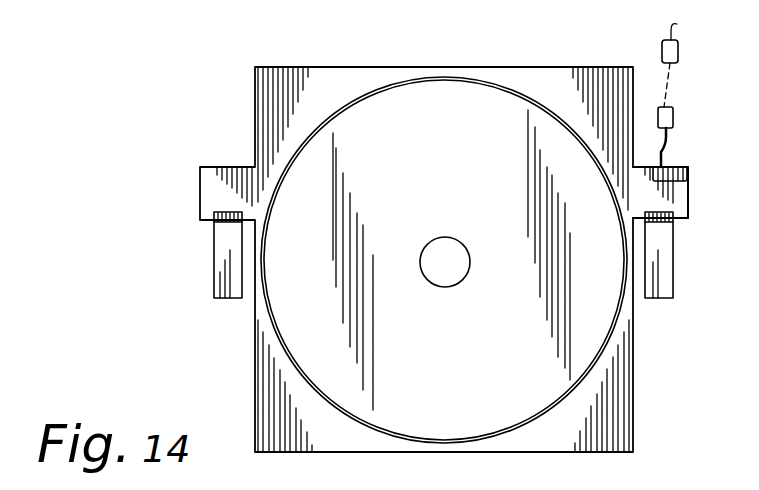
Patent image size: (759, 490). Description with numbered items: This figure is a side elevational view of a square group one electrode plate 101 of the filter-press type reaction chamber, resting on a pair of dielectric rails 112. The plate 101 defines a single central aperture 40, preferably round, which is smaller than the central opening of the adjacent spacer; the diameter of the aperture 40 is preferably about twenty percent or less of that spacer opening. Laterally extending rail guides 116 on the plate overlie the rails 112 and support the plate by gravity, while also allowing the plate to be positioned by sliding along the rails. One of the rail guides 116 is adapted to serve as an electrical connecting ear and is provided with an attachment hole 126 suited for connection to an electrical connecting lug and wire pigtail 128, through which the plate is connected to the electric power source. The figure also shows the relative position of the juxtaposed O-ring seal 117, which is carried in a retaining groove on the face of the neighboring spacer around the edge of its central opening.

The group one plate 101 is at (278, 125).
The O-ring seal 117 is at (583, 377).
The central aperture 40 is at (437, 238).
The dielectric rails 112 is at (660, 268).
The rail guides 116 is at (677, 203).
The hole 126 is at (687, 176).
The wire pigtail 128 is at (670, 137).